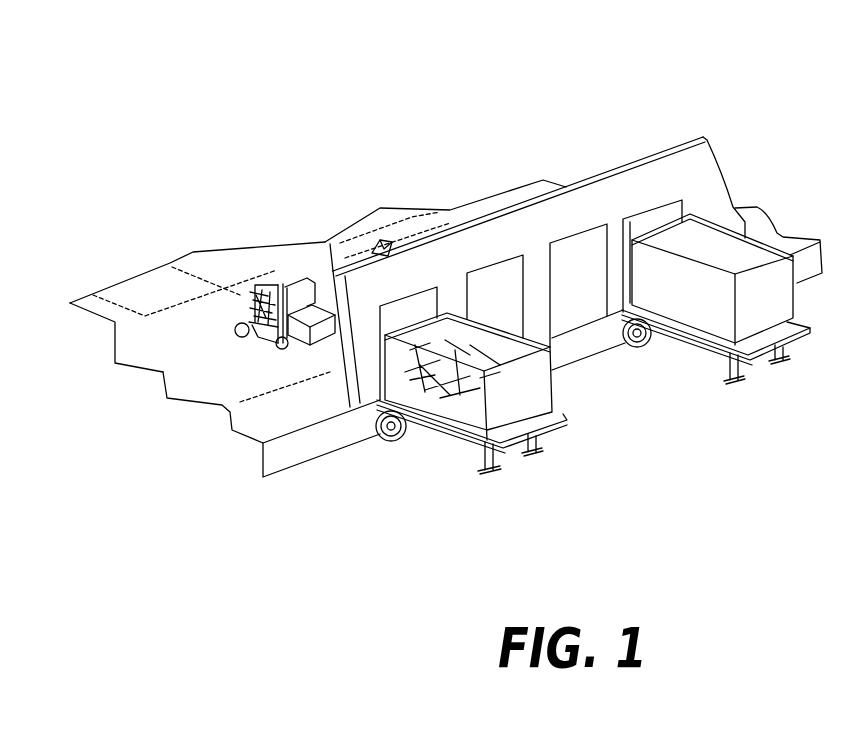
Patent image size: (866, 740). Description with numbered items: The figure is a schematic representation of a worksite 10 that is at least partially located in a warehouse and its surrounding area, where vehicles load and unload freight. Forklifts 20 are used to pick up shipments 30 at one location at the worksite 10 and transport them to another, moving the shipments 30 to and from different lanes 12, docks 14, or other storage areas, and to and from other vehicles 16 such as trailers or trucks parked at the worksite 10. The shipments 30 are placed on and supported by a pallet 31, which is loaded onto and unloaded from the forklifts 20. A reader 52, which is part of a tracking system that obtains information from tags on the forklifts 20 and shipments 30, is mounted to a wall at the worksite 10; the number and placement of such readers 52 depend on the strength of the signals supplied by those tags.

The worksite 10 is at (727, 90).
The lane 12 is at (148, 273).
The dock 14 is at (295, 417).
The vehicle 16 is at (460, 433).
The forklift 20 is at (447, 337).
The shipment 30 is at (323, 307).
The pallet 31 is at (307, 352).
The reader 52 is at (383, 240).